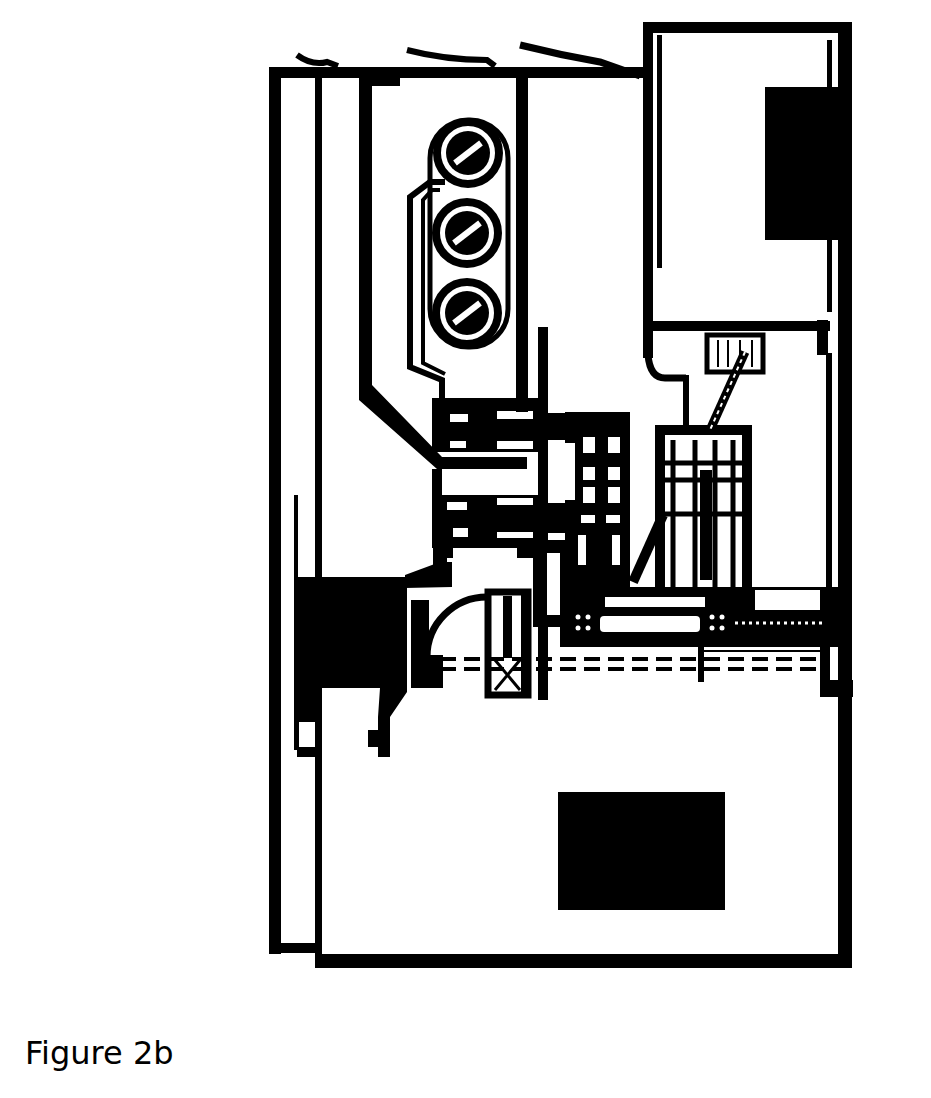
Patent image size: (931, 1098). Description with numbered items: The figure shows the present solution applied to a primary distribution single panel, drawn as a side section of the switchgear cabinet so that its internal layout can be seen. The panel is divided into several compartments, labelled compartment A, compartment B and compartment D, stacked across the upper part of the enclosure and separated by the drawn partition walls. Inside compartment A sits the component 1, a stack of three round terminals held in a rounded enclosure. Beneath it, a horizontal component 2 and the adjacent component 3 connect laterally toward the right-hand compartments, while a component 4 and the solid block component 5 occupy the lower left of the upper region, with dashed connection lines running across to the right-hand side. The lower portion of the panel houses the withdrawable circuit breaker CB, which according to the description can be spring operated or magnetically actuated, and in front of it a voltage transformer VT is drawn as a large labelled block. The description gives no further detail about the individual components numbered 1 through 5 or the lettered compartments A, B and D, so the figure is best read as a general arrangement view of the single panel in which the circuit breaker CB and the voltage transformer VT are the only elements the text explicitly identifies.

The fuse stack 1 is at (382, 267).
The connector 2 is at (490, 528).
The switch unit 3 is at (598, 519).
The actuator 4 is at (470, 643).
The terminal block 5 is at (352, 667).
The compartment A is at (443, 271).
The compartment B is at (553, 389).
The compartment D is at (743, 190).
The voltage transformer VT is at (641, 851).
The withdrawable circuit breaker CB is at (780, 973).